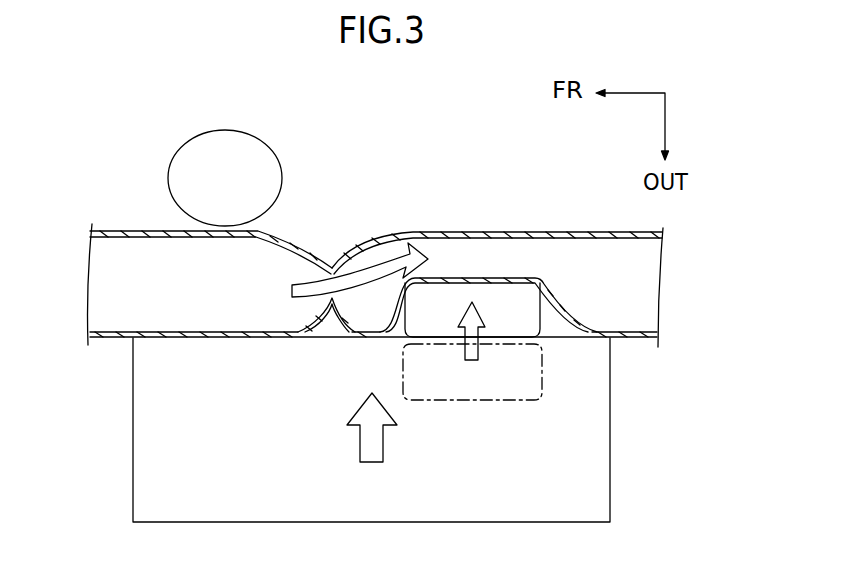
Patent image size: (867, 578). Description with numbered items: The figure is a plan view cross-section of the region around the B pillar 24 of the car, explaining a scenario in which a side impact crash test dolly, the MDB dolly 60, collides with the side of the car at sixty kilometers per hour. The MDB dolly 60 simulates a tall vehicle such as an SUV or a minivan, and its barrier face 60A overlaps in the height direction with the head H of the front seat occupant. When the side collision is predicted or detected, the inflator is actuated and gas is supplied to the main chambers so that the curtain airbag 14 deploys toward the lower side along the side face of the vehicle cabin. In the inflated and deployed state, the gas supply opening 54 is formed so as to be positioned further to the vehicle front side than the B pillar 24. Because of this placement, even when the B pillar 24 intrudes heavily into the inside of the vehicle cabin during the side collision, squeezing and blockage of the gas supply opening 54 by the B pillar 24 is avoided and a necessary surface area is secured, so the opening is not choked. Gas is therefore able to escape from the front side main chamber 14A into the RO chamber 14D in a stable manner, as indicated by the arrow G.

The curtain airbag 14 is at (376, 250).
The front side main chamber 14A is at (136, 231).
The RO chamber 14D is at (553, 232).
The gas supply opening 54 is at (330, 271).
The B pillar 24 is at (540, 312).
The barrier face 60A is at (610, 432).
The MDB dolly 60 is at (439, 430).
The arrow G is at (373, 240).
The head H is at (228, 130).